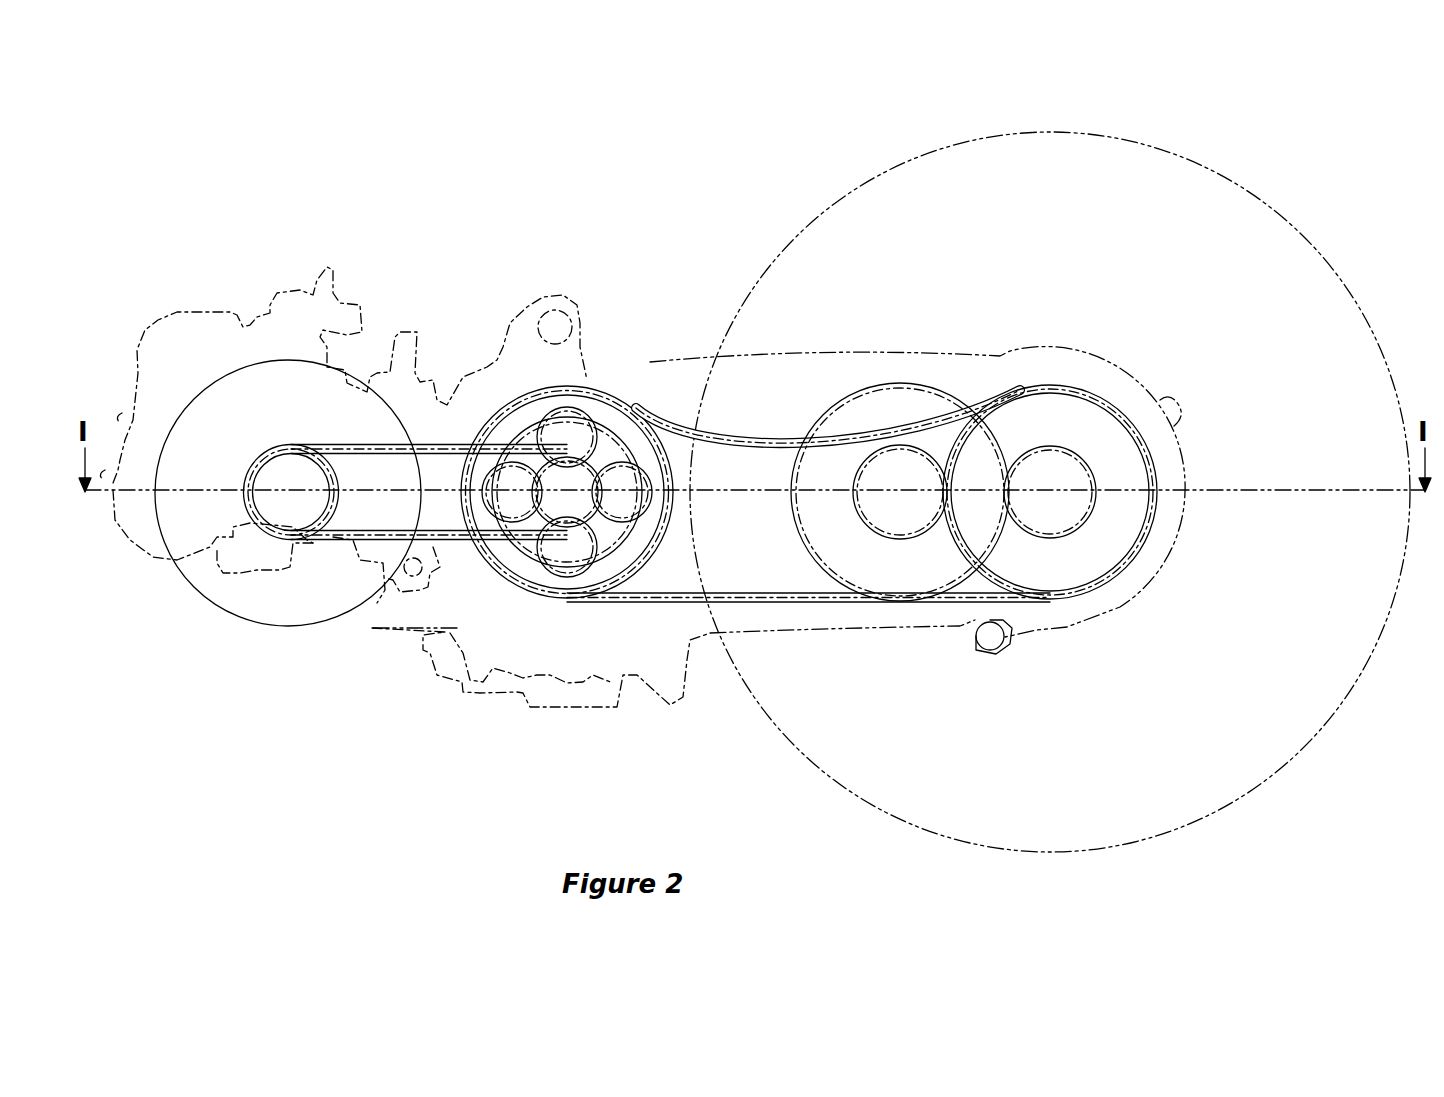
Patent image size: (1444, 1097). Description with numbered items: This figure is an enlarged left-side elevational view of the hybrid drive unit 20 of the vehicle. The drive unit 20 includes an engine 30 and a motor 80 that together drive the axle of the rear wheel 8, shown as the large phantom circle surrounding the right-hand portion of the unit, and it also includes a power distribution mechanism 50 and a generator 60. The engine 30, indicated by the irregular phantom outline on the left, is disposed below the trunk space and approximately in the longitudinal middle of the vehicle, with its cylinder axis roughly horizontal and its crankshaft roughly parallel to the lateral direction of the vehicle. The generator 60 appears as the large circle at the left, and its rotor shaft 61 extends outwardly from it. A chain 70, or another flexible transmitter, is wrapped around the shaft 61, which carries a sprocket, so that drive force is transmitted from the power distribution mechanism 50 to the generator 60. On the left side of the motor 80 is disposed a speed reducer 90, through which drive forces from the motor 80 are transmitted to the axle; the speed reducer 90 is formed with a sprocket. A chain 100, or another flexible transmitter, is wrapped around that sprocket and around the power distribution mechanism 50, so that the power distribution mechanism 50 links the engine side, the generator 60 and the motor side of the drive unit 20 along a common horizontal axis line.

The rear wheel 8 is at (1290, 258).
The drive unit 20 is at (600, 246).
The engine 30 is at (382, 303).
The power distribution mechanism 50 is at (592, 382).
The generator 60 is at (260, 628).
The rotor shaft 61 is at (276, 480).
The chain 70 is at (398, 534).
The motor 80 is at (1104, 592).
The speed reducer 90 is at (1015, 555).
The chain 100 is at (706, 370).